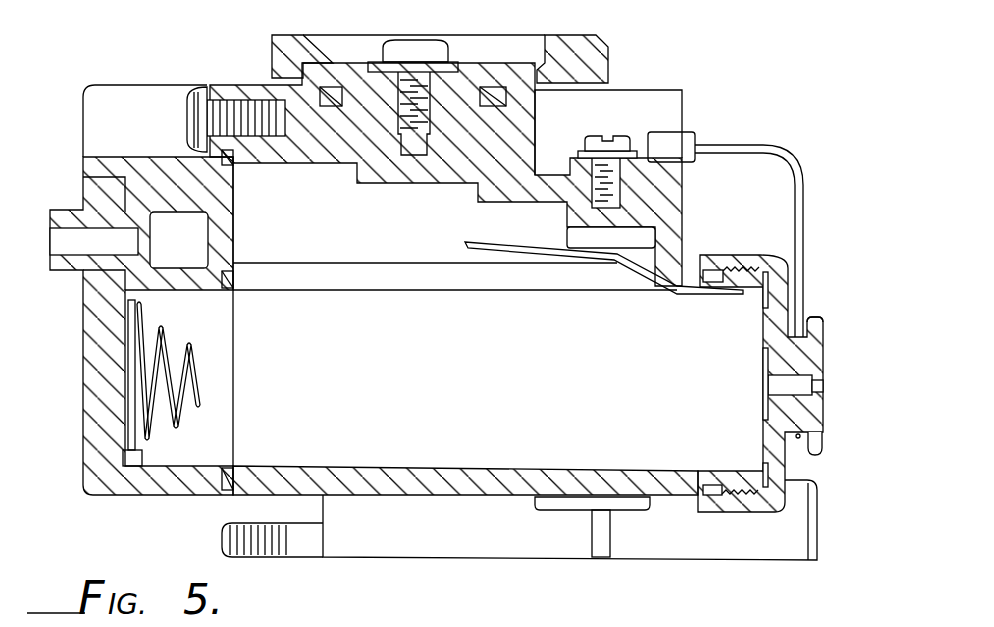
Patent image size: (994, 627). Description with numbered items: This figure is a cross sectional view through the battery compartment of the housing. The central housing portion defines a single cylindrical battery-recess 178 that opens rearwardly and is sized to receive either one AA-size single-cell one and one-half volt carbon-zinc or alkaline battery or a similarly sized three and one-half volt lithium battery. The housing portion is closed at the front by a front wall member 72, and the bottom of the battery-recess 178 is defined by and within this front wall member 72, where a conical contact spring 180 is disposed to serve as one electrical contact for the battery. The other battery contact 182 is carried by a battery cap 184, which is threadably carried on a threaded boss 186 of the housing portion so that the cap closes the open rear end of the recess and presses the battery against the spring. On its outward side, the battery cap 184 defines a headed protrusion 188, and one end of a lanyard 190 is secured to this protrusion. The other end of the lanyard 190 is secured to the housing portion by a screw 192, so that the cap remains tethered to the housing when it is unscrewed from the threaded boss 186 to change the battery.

The front wall member 72 is at (178, 495).
The cylindrical battery-recess 178 is at (478, 468).
The conical contact spring 180 is at (200, 400).
The battery contact 182 is at (766, 384).
The battery cap 184 is at (753, 255).
The threaded boss 186 is at (677, 290).
The headed protrusion 188 is at (826, 326).
The lanyard 190 is at (805, 218).
The screw 192 is at (620, 136).